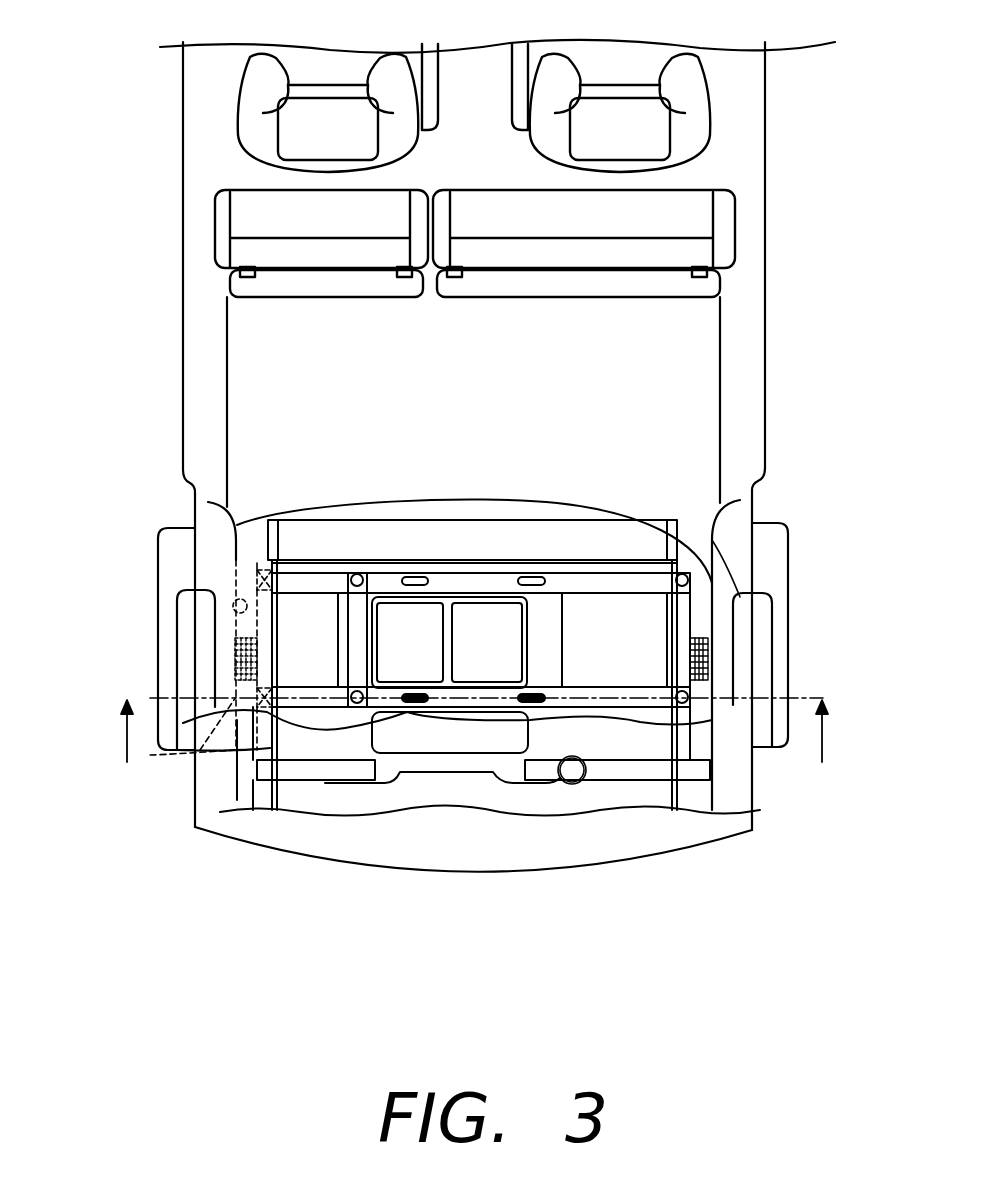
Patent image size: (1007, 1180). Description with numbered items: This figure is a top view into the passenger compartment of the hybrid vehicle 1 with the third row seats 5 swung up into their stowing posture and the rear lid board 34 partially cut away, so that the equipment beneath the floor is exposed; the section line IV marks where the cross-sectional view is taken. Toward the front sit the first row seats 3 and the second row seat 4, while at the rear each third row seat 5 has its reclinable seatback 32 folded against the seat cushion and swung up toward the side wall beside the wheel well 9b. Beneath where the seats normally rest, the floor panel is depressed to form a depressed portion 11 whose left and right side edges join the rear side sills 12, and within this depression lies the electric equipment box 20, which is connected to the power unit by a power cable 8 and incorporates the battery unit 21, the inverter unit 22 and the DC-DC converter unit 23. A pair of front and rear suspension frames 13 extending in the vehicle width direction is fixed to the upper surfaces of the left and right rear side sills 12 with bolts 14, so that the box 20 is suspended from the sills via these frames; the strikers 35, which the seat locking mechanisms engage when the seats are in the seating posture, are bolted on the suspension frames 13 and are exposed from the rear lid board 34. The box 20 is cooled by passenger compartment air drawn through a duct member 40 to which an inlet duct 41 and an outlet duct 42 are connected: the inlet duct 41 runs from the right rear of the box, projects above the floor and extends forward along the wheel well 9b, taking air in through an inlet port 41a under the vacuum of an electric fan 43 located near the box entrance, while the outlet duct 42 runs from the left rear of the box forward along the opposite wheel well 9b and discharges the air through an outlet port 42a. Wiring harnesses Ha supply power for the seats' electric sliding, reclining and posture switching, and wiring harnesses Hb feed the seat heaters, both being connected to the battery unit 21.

The vehicle 1 is at (804, 76).
The first row seats 3 is at (228, 125).
The second row seat 4 is at (205, 262).
The third row seats 5 is at (166, 652).
The power cable 8 is at (572, 771).
The wheel well 9b is at (233, 603).
The depressed portion 11 is at (393, 784).
The rear side sill 12 is at (248, 541).
The rear suspension frame 13 is at (637, 585).
The bolt 14 is at (258, 578).
The electric equipment box 20 is at (509, 796).
The battery unit 21 is at (437, 740).
The inverter unit 22 is at (400, 610).
The DC-DC converter unit 23 is at (487, 610).
The seatback 32 is at (190, 623).
The rear lid board 34 is at (543, 443).
The striker 35 is at (415, 585).
The duct member 40 is at (473, 838).
The inlet duct 41 is at (598, 772).
The inlet port 41a is at (710, 648).
The outlet duct 42 is at (328, 772).
The outlet port 42a is at (235, 640).
The electric fan 43 is at (568, 784).
The wiring harness Ha is at (302, 702).
The wiring harness Hb is at (203, 657).
The section line IV is at (474, 731).